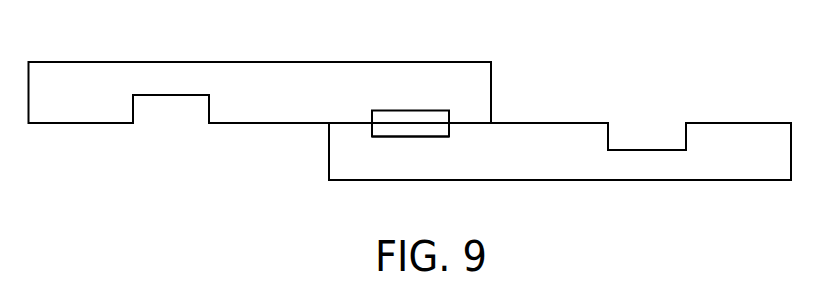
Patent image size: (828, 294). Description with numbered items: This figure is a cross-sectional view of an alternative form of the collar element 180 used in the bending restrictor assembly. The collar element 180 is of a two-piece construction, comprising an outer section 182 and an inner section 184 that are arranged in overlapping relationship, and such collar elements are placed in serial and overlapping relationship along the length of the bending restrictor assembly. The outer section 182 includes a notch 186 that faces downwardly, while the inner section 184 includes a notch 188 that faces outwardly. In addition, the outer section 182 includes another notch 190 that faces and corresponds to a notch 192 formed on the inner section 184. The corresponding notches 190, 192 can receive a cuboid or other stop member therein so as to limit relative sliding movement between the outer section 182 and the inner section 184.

The collar element 180 is at (410, 95).
The outer section 182 is at (260, 97).
The inner section 184 is at (560, 126).
The notch 186 is at (135, 107).
The notch 188 is at (678, 133).
The notch 190 is at (407, 121).
The notch 192 is at (396, 138).